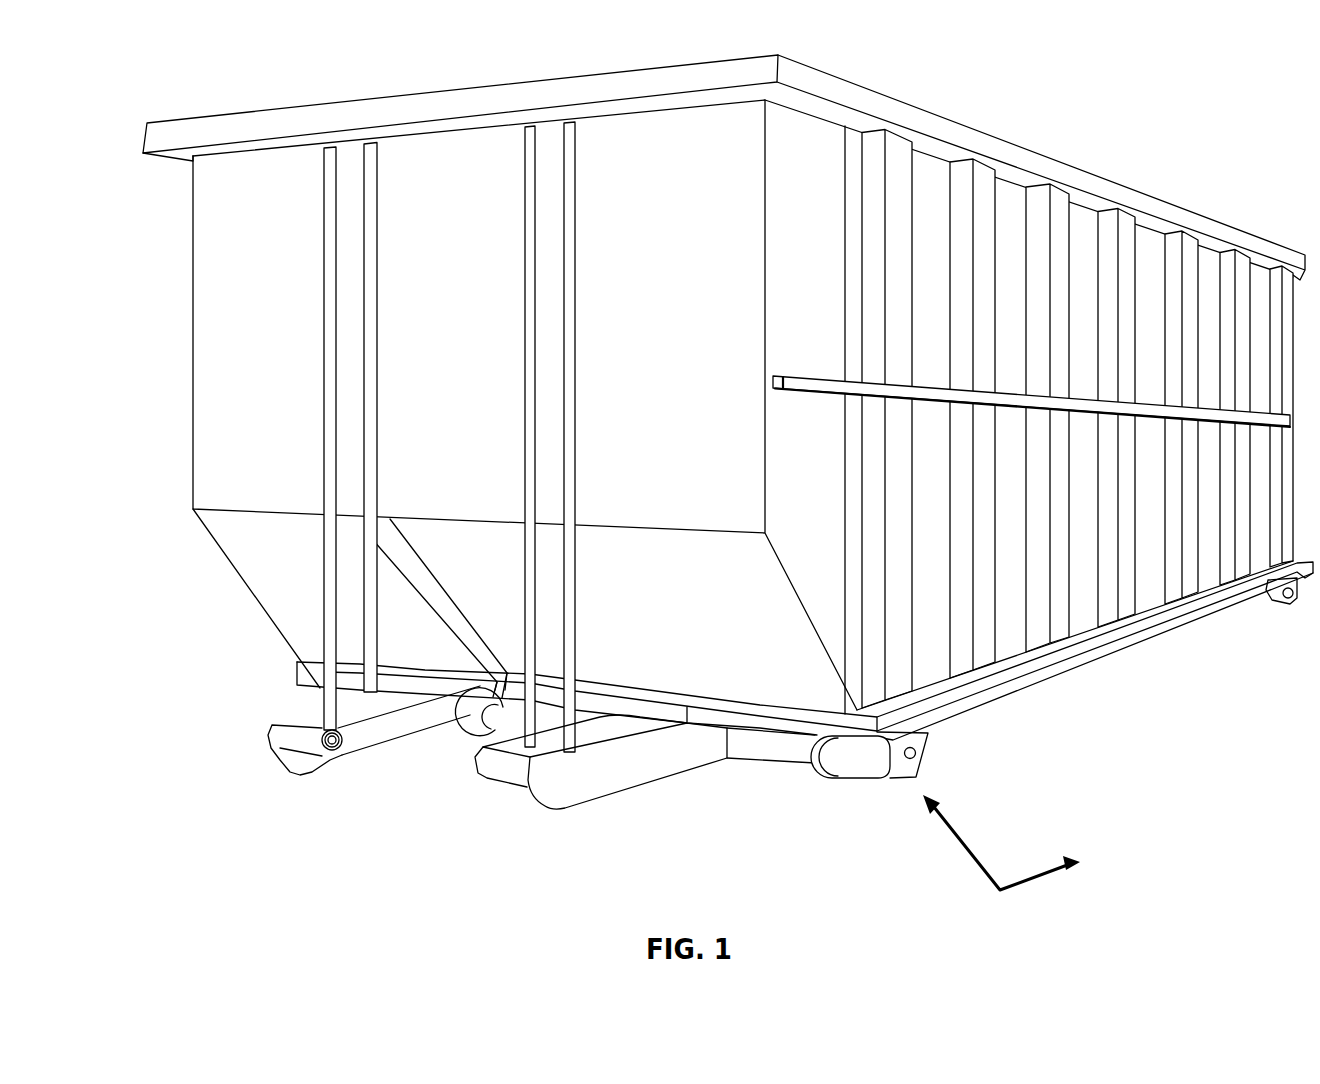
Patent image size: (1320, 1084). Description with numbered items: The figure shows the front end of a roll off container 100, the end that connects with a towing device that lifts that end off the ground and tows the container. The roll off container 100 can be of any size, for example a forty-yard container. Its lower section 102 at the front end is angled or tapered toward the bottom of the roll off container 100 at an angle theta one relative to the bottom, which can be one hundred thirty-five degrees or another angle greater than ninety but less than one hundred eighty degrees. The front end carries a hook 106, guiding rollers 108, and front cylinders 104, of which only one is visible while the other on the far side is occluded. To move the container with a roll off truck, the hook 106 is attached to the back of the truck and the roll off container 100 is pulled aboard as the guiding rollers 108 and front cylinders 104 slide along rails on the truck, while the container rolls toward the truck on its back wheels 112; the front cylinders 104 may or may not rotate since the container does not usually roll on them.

The roll off container 100 is at (176, 72).
The lower section 102 is at (222, 548).
The front cylinders 104 is at (856, 779).
The hook 106 is at (467, 733).
The guiding rollers 108 is at (497, 763).
The back wheels 112 is at (1283, 603).